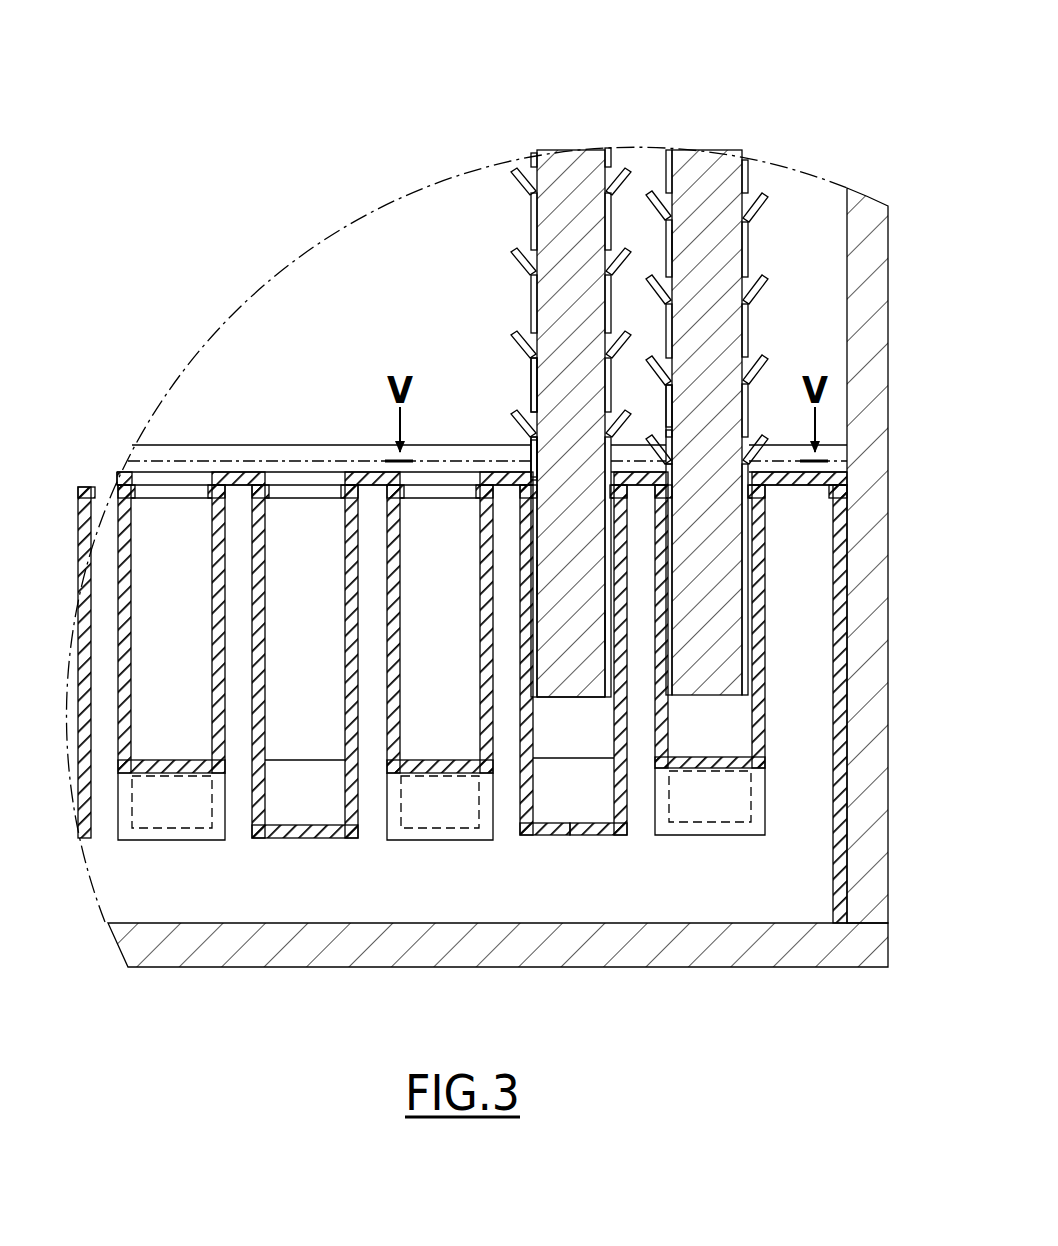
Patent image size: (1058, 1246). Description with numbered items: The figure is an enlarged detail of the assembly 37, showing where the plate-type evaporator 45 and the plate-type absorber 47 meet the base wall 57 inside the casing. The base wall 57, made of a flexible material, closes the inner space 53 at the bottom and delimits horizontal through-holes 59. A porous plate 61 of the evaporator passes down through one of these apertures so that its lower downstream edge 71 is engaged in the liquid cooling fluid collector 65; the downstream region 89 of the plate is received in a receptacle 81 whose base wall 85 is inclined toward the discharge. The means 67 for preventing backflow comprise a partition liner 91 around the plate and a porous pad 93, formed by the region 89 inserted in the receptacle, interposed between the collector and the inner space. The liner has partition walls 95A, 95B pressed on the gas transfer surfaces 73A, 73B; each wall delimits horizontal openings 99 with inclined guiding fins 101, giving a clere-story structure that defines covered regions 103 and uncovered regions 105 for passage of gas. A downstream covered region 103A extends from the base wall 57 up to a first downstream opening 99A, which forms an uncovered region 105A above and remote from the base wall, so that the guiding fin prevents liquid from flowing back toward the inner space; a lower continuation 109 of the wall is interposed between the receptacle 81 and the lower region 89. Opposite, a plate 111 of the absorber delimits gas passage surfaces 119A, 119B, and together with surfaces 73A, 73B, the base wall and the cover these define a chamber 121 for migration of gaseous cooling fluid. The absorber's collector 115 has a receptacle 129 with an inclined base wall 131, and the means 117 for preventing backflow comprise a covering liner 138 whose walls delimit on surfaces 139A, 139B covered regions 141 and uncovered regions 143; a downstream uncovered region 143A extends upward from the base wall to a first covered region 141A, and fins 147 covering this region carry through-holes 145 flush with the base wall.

The assembly 37 is at (662, 1030).
The plate-type evaporator 45 is at (530, 364).
The plate-type absorber 47 is at (730, 353).
The inner space 53 is at (390, 331).
The base wall 57 is at (362, 483).
The horizontal through-holes 59 is at (292, 447).
The porous plate 61 is at (535, 172).
The liquid cooling fluid collector 65 is at (581, 750).
The means for preventing backflow 67 is at (412, 258).
The lower downstream edge 71 is at (582, 813).
The gas transfer surface 73A is at (605, 250).
The gas transfer surface 73B is at (531, 230).
The receptacle 81 is at (540, 840).
The base wall 85 is at (600, 810).
The downstream region 89 is at (560, 574).
The partition liner 91 is at (512, 352).
The porous pad 93 is at (570, 625).
The partition wall 95A is at (612, 213).
The partition wall 95B is at (548, 221).
The horizontal openings 99 is at (518, 332).
The first downstream opening 99A is at (522, 412).
The inclined guiding fin 101 is at (518, 432).
The covered regions 103 is at (552, 283).
The downstream covered region 103A is at (552, 440).
The uncovered regions 105 is at (552, 333).
The uncovered region 105A is at (552, 412).
The lower continuation 109 is at (535, 682).
The plate 111 is at (696, 178).
The collector 115 is at (738, 750).
The means for preventing backflow 117 is at (800, 208).
The gas passage surface 119A is at (670, 180).
The gas passage surface 119B is at (746, 197).
The chamber 121 is at (652, 242).
The receptacle 129 is at (762, 728).
The base wall 131 is at (728, 803).
The covering liner 138 is at (753, 332).
The covering wall surface 139A is at (689, 333).
The covering wall surface 139B is at (748, 250).
The covered regions 141 is at (689, 228).
The first covered region 141A is at (673, 428).
The uncovered regions 143 is at (689, 273).
The downstream uncovered region 143A is at (673, 452).
The through-holes 145 is at (684, 468).
The fins 147 is at (652, 440).